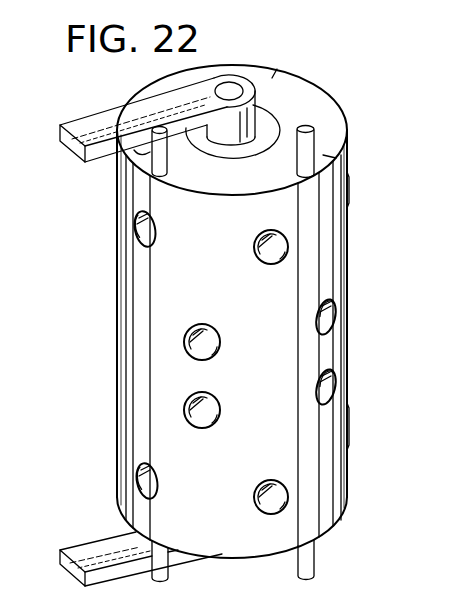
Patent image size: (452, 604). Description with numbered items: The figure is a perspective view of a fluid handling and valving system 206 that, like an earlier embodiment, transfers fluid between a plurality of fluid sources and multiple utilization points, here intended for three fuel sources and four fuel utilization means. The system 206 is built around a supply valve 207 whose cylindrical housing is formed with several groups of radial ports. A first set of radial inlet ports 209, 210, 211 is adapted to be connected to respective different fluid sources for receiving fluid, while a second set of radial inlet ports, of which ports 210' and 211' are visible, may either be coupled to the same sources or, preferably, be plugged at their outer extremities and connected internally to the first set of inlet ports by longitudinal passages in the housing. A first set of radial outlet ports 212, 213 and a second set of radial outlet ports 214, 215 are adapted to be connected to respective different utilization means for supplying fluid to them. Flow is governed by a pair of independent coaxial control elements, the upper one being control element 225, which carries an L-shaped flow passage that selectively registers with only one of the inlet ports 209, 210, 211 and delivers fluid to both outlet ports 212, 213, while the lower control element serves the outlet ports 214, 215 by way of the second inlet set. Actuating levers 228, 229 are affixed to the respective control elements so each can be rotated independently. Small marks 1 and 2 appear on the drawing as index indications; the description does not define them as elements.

The fluid handling and valving system 206 is at (327, 32).
The supply valve 207 is at (336, 100).
The radial inlet port 209 is at (157, 234).
The radial inlet port 210 is at (232, 245).
The radial inlet port 210' is at (239, 500).
The radial inlet port 211 is at (380, 190).
The radial inlet port 211' is at (383, 426).
The radial outlet port 212 is at (208, 326).
The radial outlet port 213 is at (316, 319).
The radial outlet port 214 is at (210, 396).
The radial outlet port 215 is at (316, 389).
The control element 225 is at (266, 127).
The actuating lever 228 is at (88, 118).
The actuating lever 229 is at (87, 545).
The index mark 1 is at (326, 156).
The index mark 2 is at (269, 82).